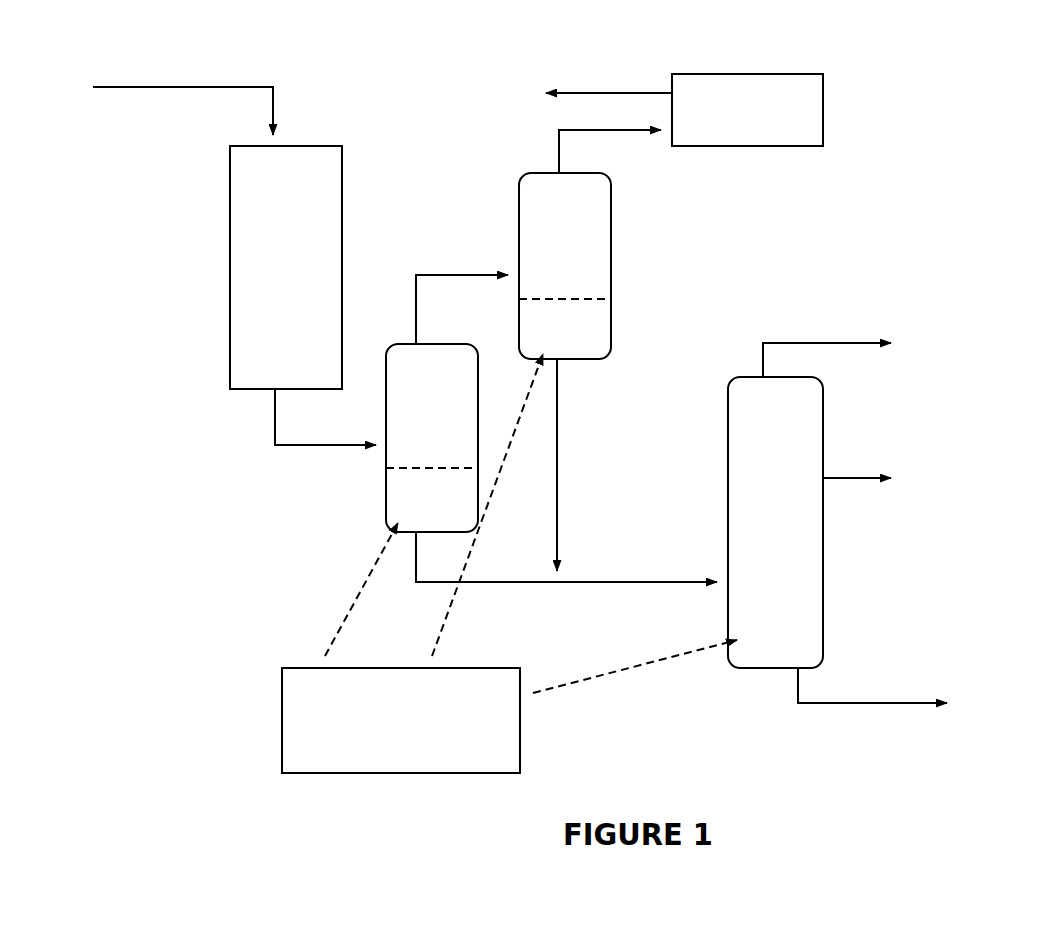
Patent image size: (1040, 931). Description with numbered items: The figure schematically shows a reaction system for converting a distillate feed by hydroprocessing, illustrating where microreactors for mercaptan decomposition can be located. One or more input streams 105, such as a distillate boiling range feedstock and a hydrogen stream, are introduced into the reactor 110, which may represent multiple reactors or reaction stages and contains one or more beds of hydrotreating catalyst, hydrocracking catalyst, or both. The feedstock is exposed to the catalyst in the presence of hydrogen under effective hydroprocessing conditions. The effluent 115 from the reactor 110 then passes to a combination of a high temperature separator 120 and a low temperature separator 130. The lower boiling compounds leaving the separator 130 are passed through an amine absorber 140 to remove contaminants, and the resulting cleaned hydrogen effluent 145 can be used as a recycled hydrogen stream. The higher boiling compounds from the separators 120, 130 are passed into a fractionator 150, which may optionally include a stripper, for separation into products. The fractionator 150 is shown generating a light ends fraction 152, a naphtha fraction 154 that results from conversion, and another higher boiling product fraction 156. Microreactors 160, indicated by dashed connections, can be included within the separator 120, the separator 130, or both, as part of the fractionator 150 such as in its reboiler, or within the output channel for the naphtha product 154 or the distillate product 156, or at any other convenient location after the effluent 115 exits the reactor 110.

The input streams 105 is at (143, 73).
The reactor 110 is at (286, 267).
The effluent 115 is at (253, 428).
The high temperature separator 120 is at (432, 438).
The low temperature separator 130 is at (565, 266).
The amine absorber 140 is at (747, 110).
The cleaned hydrogen effluent 145 is at (558, 75).
The fractionator 150 is at (775, 522).
The light ends fraction 152 is at (878, 318).
The naphtha fraction 154 is at (860, 463).
The higher boiling product fraction 156 is at (890, 685).
The microreactors 160 is at (260, 668).